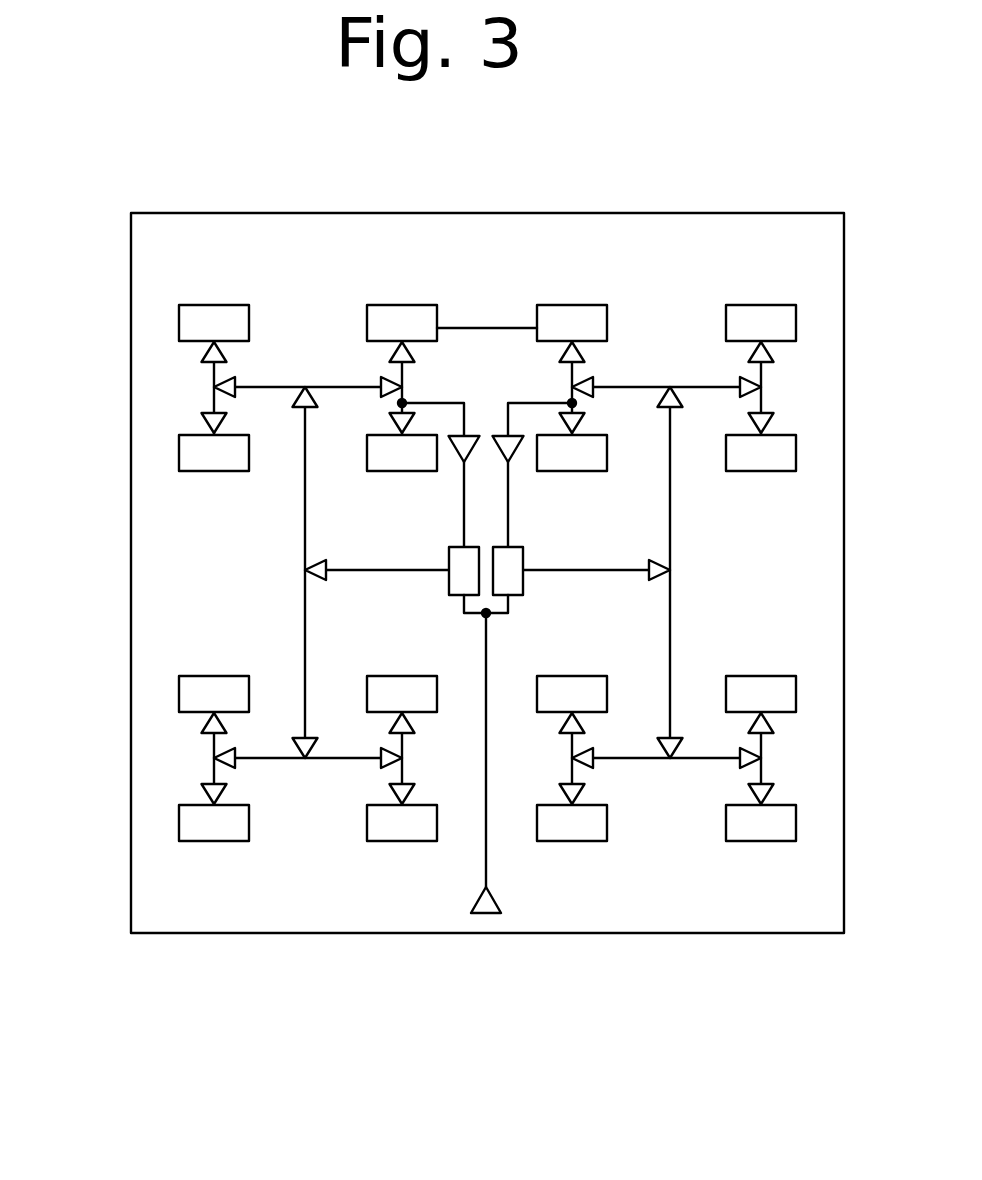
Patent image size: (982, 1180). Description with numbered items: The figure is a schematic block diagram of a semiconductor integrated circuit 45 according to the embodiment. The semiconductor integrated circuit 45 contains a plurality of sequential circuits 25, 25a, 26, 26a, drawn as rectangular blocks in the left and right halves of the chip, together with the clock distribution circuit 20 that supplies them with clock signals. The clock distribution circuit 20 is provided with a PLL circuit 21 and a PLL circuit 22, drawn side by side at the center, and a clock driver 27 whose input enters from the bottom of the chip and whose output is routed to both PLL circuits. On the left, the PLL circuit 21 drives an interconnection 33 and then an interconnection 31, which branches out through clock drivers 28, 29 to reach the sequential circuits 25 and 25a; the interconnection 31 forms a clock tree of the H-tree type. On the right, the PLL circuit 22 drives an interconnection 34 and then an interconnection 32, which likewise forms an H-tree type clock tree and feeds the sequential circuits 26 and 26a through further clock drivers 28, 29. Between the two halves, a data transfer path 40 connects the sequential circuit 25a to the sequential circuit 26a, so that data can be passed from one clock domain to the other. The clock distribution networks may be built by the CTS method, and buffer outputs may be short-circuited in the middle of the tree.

The clock distribution circuit 20 is at (173, 593).
The PLL circuit 21 is at (449, 583).
The PLL circuit 22 is at (523, 585).
The sequential circuit 25 is at (215, 305).
The sequential circuit 25a is at (402, 305).
The sequential circuit 26 is at (760, 305).
The sequential circuit 26a is at (572, 305).
The clock driver 27 is at (486, 913).
The clock driver 28 is at (307, 382).
The clock driver 29 is at (457, 453).
The interconnection 31 is at (305, 512).
The interconnection 32 is at (620, 570).
The interconnection 33 is at (463, 527).
The interconnection 34 is at (509, 527).
The data transfer path 40 is at (502, 328).
The semiconductor integrated circuit 45 is at (707, 200).